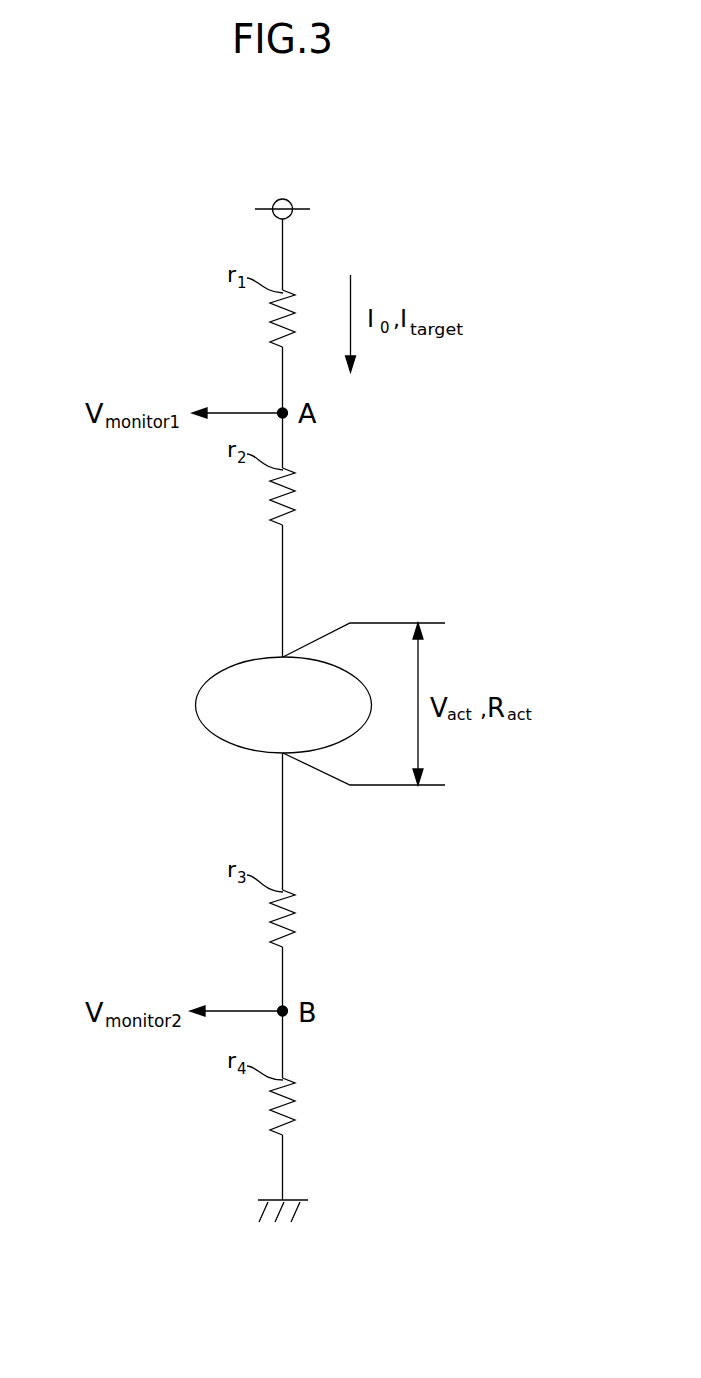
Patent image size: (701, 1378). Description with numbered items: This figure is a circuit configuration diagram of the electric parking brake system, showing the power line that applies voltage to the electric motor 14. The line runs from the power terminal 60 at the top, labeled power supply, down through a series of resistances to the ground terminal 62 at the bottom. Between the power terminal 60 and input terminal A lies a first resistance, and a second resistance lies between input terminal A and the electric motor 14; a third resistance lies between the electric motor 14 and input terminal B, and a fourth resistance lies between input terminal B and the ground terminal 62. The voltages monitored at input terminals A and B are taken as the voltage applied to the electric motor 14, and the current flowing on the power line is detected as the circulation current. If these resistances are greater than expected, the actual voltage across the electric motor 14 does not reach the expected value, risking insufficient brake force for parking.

The power terminal 60 is at (280, 199).
The electric motor 14 is at (230, 665).
The ground terminal 62 is at (308, 1200).